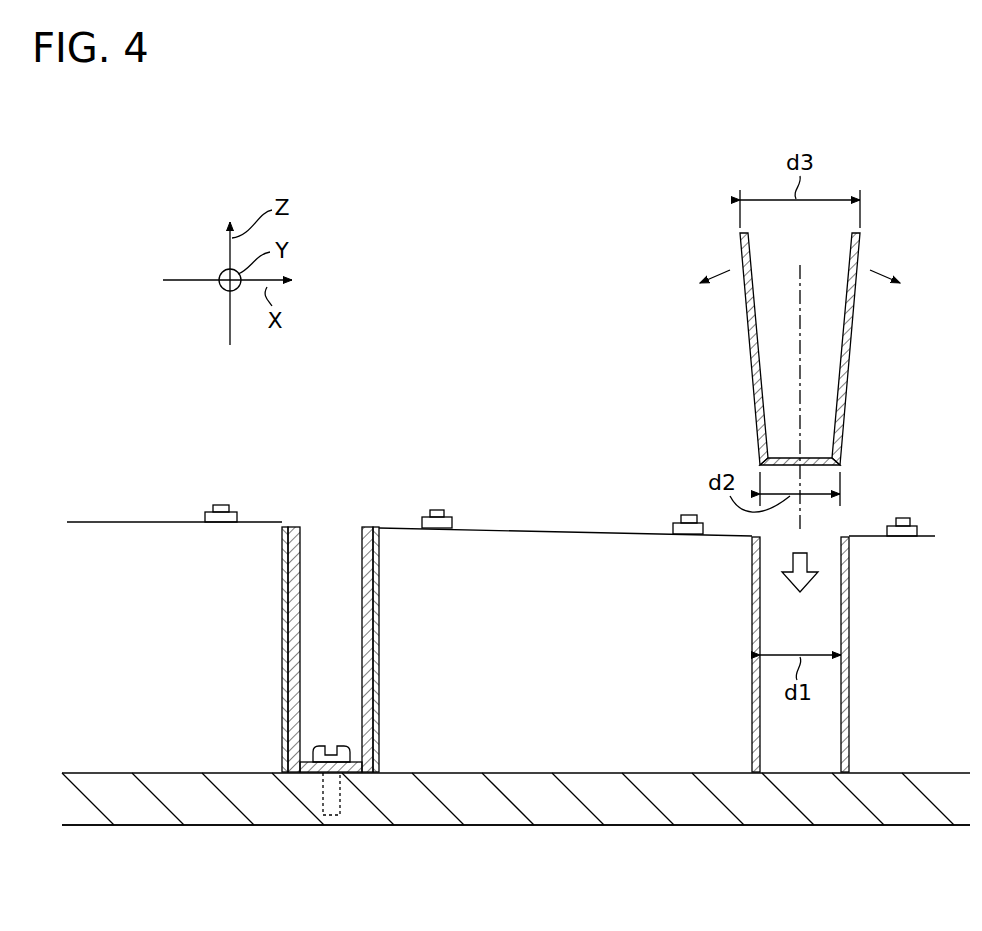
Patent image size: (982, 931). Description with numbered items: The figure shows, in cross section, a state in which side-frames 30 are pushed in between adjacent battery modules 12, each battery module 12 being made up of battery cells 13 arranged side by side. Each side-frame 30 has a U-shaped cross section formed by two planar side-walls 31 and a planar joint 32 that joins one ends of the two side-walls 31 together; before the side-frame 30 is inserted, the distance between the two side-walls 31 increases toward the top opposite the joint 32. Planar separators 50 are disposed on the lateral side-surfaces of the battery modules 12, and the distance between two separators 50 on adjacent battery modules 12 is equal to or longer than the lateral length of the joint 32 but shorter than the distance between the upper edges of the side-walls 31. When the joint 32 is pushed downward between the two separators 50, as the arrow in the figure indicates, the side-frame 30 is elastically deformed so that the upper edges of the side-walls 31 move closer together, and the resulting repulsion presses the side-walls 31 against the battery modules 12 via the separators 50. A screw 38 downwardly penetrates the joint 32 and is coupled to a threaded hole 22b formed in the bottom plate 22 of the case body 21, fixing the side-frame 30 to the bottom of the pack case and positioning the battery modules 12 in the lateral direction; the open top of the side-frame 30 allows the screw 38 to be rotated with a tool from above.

The battery module 12 is at (127, 521).
The battery cell 13 is at (168, 521).
The case body 21 is at (514, 830).
The bottom plate 22 is at (648, 827).
The threaded hole 22b is at (323, 795).
The side-frame 30 is at (581, 502).
The side-wall 31 is at (855, 308).
The joint 32 is at (815, 455).
The screw 38 is at (322, 745).
The separator 50 is at (752, 617).